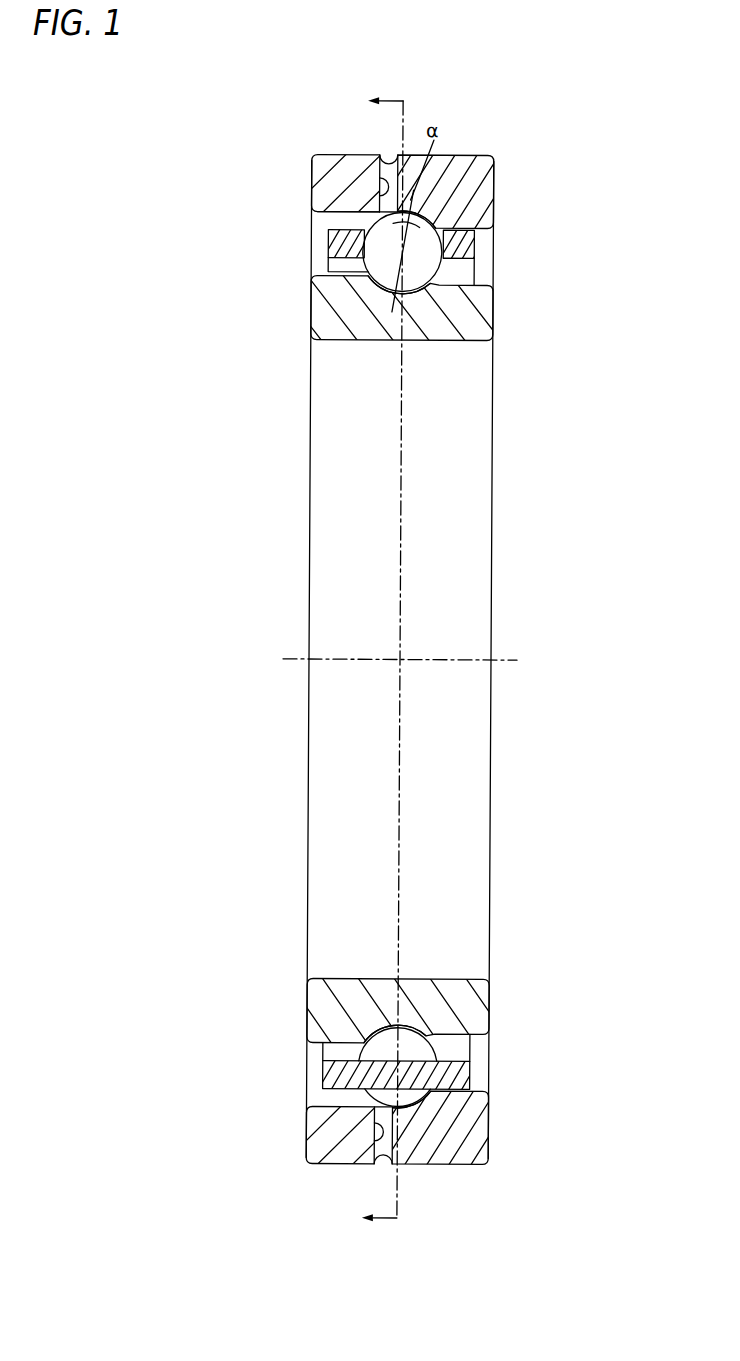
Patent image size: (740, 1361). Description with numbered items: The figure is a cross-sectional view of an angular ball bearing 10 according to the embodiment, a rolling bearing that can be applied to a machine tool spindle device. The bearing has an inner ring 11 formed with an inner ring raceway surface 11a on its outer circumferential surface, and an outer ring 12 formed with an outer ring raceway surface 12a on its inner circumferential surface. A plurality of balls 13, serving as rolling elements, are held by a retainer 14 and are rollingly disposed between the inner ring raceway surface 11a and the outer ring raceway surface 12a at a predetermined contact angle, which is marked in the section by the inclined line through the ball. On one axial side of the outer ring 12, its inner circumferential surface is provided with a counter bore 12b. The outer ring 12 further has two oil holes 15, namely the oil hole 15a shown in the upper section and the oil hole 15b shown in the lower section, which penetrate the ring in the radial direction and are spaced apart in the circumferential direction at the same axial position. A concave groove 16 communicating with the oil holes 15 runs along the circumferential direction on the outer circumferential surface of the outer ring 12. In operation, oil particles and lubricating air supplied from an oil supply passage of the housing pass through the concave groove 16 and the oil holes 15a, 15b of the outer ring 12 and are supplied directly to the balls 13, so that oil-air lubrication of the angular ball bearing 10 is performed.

The angular ball bearing 10 is at (552, 138).
The inner ring 11 is at (480, 308).
The inner ring raceway surface 11a is at (399, 294).
The outer ring 12 is at (480, 205).
The outer ring raceway surface 12a is at (424, 211).
The counter bore 12b is at (330, 212).
The ball 13 is at (431, 277).
The retainer 14 is at (326, 245).
The oil hole 15 is at (303, 660).
The oil hole 15a is at (375, 184).
The oil hole 15b is at (375, 1140).
The concave groove 16 is at (383, 160).